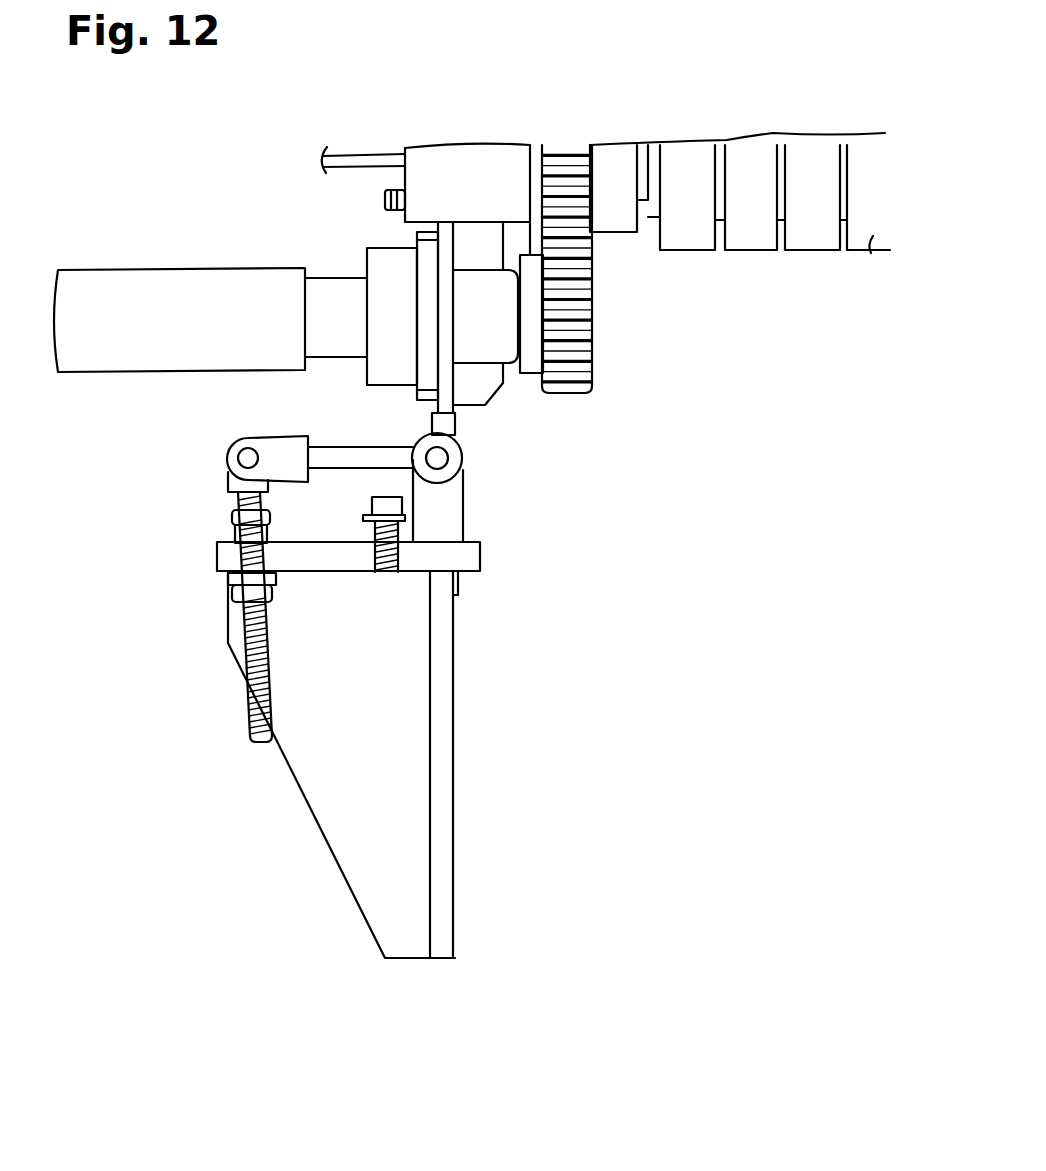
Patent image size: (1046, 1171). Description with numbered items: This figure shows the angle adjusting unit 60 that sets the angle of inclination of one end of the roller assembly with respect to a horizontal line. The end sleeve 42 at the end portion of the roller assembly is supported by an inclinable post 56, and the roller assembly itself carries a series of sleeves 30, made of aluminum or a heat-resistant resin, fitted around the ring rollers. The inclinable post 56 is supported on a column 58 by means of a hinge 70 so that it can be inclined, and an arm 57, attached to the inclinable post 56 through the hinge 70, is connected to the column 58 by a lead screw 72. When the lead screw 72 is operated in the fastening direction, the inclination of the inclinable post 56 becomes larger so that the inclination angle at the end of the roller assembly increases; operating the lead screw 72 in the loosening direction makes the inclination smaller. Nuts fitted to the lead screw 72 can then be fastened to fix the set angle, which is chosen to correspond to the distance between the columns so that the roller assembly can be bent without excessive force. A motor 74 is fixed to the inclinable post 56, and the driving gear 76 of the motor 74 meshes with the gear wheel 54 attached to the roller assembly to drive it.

The sleeve 30 is at (752, 245).
The end sleeve 42 is at (462, 158).
The gear wheel 54 is at (562, 165).
The inclinable post 56 is at (443, 385).
The arm 57 is at (330, 455).
The column 58 is at (403, 732).
The angle adjusting unit 60 is at (213, 440).
The hinge 70 is at (440, 458).
The lead screw 72 is at (270, 660).
The motor 74 is at (245, 283).
The driving gear 76 is at (592, 337).